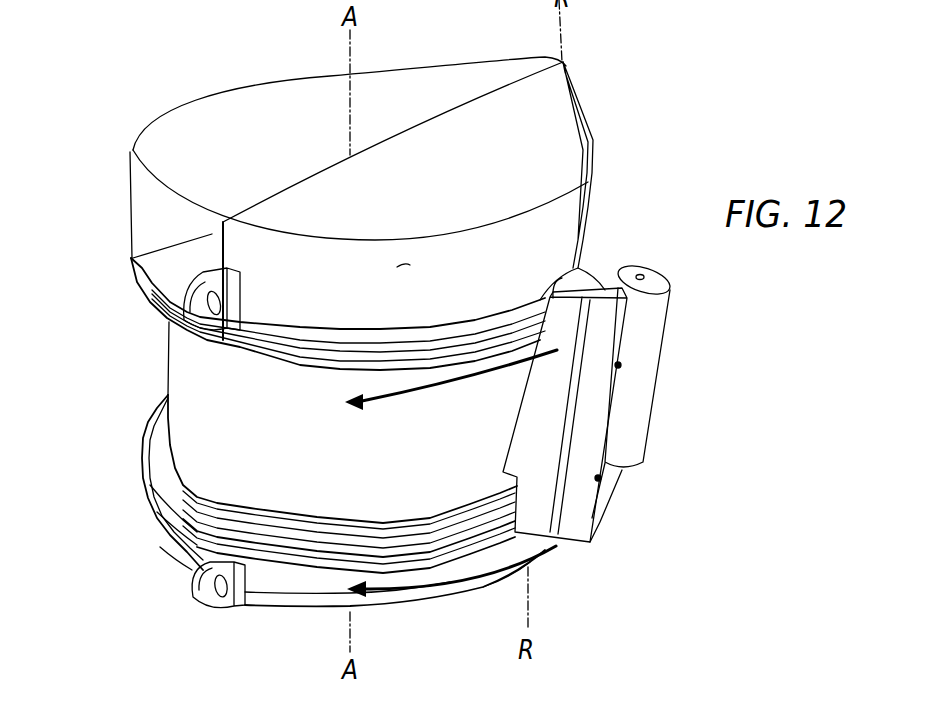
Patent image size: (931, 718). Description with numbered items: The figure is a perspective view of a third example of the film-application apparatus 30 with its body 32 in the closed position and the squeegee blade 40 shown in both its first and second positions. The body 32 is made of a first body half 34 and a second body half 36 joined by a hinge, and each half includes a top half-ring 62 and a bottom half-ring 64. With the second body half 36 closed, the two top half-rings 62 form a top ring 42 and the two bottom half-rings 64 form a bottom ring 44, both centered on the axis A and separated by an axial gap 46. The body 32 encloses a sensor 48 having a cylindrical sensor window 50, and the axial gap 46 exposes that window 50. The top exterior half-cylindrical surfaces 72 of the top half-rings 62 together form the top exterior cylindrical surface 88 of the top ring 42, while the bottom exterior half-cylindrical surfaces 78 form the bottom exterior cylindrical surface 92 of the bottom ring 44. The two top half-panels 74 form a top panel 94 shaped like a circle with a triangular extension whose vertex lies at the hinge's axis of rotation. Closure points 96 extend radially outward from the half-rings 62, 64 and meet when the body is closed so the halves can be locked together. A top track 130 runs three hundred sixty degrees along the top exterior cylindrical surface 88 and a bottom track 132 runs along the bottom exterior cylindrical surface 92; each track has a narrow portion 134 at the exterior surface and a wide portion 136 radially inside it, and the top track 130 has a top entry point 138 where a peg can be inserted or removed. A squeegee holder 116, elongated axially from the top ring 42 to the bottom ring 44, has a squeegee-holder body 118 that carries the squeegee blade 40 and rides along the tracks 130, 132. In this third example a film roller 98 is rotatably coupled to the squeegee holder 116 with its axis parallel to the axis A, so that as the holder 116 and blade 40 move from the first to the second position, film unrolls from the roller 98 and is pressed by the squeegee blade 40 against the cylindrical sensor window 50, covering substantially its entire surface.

The film-application apparatus 30 is at (124, 70).
The body 32 is at (309, 78).
The first body half 34 is at (233, 93).
The top half-panel 74 is at (545, 102).
The top panel 94 is at (553, 155).
The top ring 42 is at (128, 202).
The top half-ring 62 is at (247, 255).
The top exterior half-cylindrical surface 72 is at (235, 222).
The top exterior cylindrical surface 88 is at (397, 267).
The top entry point 138 is at (555, 280).
The axial gap 46 is at (150, 335).
The top track 130 is at (283, 332).
The wide portion 136 is at (337, 337).
The narrow portion 134 is at (312, 356).
The closure point 96 is at (197, 332).
The sensor 48 is at (210, 435).
The bottom half-ring 64 is at (297, 513).
The cylindrical sensor window 50 is at (173, 475).
The bottom exterior half-cylindrical surface 78 is at (160, 518).
The bottom ring 44 is at (160, 547).
The bottom track 132 is at (300, 557).
The second body half 36 is at (488, 585).
The bottom exterior cylindrical surface 92 is at (435, 592).
The squeegee blade 40 is at (505, 435).
The film roller 98 is at (670, 317).
The squeegee holder 116 is at (587, 420).
The squeegee-holder body 118 is at (600, 520).